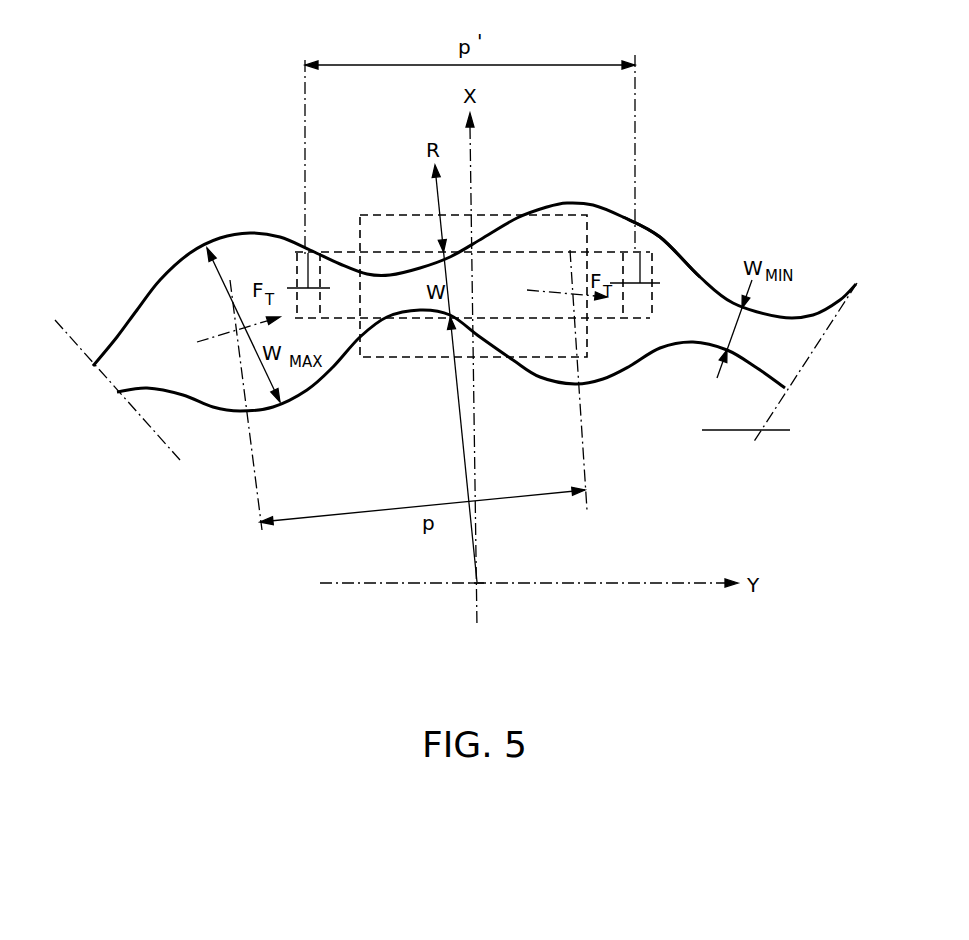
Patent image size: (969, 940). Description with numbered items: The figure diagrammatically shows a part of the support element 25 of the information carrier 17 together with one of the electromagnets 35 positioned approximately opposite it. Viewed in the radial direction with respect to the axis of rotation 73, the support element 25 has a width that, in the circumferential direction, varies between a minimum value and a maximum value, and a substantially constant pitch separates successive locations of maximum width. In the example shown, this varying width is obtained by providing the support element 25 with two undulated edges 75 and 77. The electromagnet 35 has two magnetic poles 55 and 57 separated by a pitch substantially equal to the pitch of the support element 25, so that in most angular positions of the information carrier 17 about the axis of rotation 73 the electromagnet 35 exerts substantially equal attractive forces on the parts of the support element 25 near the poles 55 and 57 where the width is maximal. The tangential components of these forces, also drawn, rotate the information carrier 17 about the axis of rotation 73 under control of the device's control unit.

The information carrier 17 is at (779, 363).
The support element 25 is at (474, 268).
The electromagnet 35 is at (600, 203).
The magnetic pole 55 is at (292, 275).
The magnetic pole 57 is at (675, 248).
The axis of rotation 73 is at (482, 582).
The undulated edge 75 is at (650, 230).
The undulated edge 77 is at (656, 353).